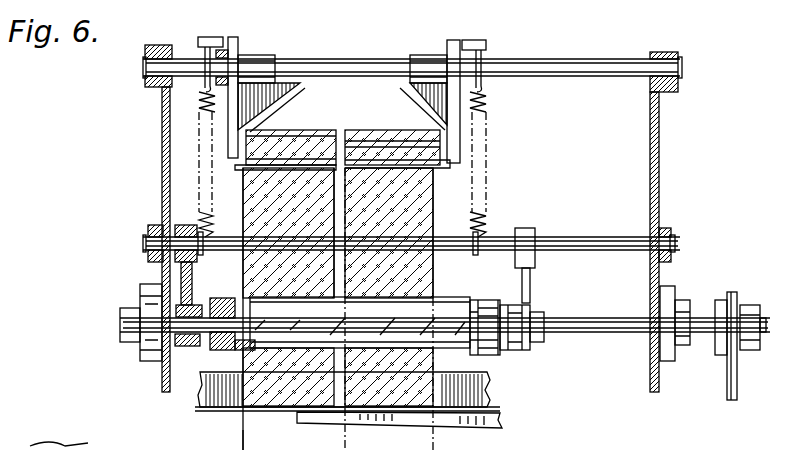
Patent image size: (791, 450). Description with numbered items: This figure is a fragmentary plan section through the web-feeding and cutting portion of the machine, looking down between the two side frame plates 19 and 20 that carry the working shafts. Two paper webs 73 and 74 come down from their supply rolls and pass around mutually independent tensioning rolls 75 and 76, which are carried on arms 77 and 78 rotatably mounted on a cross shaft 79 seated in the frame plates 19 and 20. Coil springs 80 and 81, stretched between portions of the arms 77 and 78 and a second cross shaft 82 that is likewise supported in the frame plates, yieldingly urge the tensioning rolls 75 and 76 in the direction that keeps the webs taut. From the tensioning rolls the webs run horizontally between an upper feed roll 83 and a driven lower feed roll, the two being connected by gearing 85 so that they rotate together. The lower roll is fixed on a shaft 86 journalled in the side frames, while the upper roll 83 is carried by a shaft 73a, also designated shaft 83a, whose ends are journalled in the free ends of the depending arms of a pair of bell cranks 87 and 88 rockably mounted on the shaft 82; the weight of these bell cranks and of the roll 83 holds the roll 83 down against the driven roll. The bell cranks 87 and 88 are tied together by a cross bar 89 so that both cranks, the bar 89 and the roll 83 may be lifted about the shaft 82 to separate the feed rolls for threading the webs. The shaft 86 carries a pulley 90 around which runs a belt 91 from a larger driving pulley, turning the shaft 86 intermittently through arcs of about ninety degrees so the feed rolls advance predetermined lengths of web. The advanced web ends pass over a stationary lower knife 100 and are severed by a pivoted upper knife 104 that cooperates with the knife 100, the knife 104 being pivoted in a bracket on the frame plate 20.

The frame plate 19 is at (162, 175).
The frame plate 20 is at (660, 168).
The paper web 73 is at (252, 208).
The shaft 73a is at (248, 438).
The paper web 74 is at (425, 208).
The tensioning roll 75 is at (240, 133).
The tensioning roll 76 is at (442, 122).
The arm 77 is at (252, 115).
The arm 78 is at (432, 98).
The cross shaft 79 is at (328, 60).
The coil spring 80 is at (198, 125).
The coil spring 81 is at (490, 115).
The cross shaft 82 is at (296, 237).
The upper feed roll 83 is at (398, 300).
The shaft 83a is at (238, 350).
The gearing 85 is at (492, 352).
The shaft 86 is at (572, 334).
The bell crank 87 is at (195, 287).
The bell crank 88 is at (526, 288).
The cross bar 89 is at (506, 302).
The pulley 90 is at (722, 352).
The belt 91 is at (740, 398).
The stationary knife 100 is at (487, 396).
The pivoted upper knife 104 is at (502, 420).